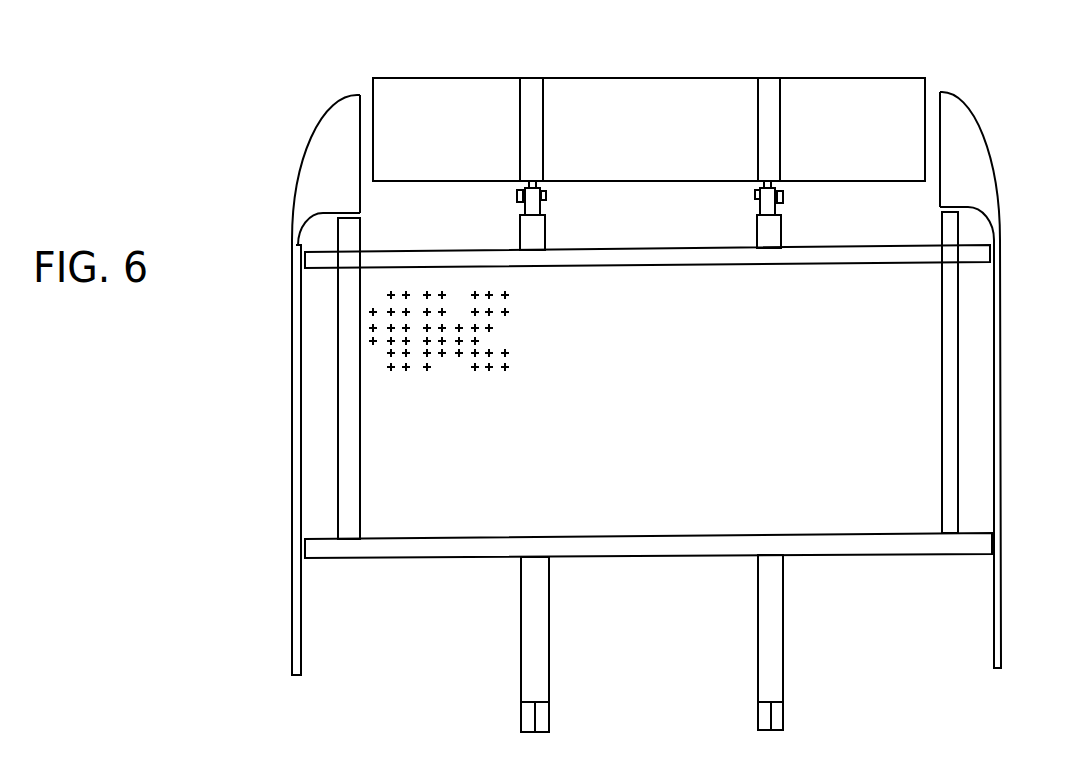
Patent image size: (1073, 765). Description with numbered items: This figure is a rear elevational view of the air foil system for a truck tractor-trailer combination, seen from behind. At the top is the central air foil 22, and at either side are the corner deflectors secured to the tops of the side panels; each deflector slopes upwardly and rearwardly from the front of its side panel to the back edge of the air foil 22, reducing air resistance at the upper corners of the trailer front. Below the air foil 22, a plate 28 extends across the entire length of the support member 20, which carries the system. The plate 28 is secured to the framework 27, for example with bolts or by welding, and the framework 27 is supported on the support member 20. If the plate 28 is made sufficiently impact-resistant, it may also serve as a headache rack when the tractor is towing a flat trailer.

The support member 20 is at (510, 676).
The air foil 22 is at (625, 78).
The framework 27 is at (425, 560).
The plate 28 is at (385, 323).